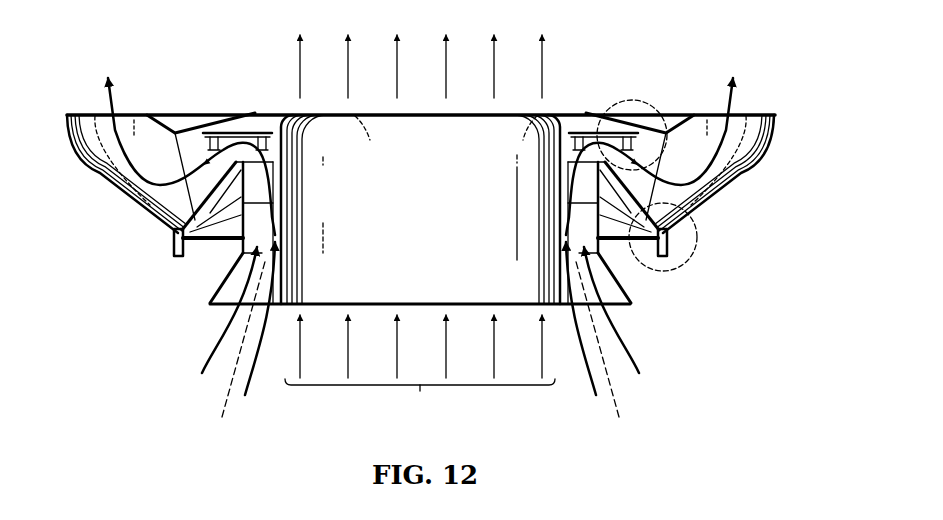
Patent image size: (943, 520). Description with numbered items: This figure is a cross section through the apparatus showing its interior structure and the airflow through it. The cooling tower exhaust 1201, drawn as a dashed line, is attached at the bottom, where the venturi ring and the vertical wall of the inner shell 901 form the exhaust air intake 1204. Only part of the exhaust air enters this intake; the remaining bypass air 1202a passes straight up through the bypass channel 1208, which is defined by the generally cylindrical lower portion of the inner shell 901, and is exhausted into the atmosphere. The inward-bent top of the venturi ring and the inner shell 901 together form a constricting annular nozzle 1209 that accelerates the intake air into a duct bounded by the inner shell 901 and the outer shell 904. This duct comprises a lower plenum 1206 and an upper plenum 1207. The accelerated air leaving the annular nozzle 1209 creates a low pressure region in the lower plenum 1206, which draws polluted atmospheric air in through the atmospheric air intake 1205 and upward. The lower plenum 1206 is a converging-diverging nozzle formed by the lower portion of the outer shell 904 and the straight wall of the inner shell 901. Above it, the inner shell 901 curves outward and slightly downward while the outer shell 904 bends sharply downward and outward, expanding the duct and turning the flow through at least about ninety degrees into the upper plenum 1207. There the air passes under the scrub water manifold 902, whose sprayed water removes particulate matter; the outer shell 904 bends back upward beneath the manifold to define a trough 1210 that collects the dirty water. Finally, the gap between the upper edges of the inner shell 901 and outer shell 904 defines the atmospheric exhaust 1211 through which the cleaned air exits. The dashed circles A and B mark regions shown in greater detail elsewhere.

The inner shell 901 is at (232, 112).
The scrub water manifold 902 is at (655, 115).
The outer shell 904 is at (773, 150).
The detail circle A is at (618, 105).
The detail circle B is at (673, 268).
The cooling tower exhaust 1201 is at (226, 402).
The bypass air 1202a is at (420, 396).
The exhaust air intake 1204 is at (245, 262).
The atmospheric air intake 1205 is at (235, 280).
The lower plenum 1206 is at (443, 207).
The upper plenum 1207 is at (150, 168).
The bypass channel 1208 is at (172, 243).
The annular nozzle 1209 is at (597, 292).
The trough 1210 is at (172, 200).
The atmospheric exhaust 1211 is at (112, 120).